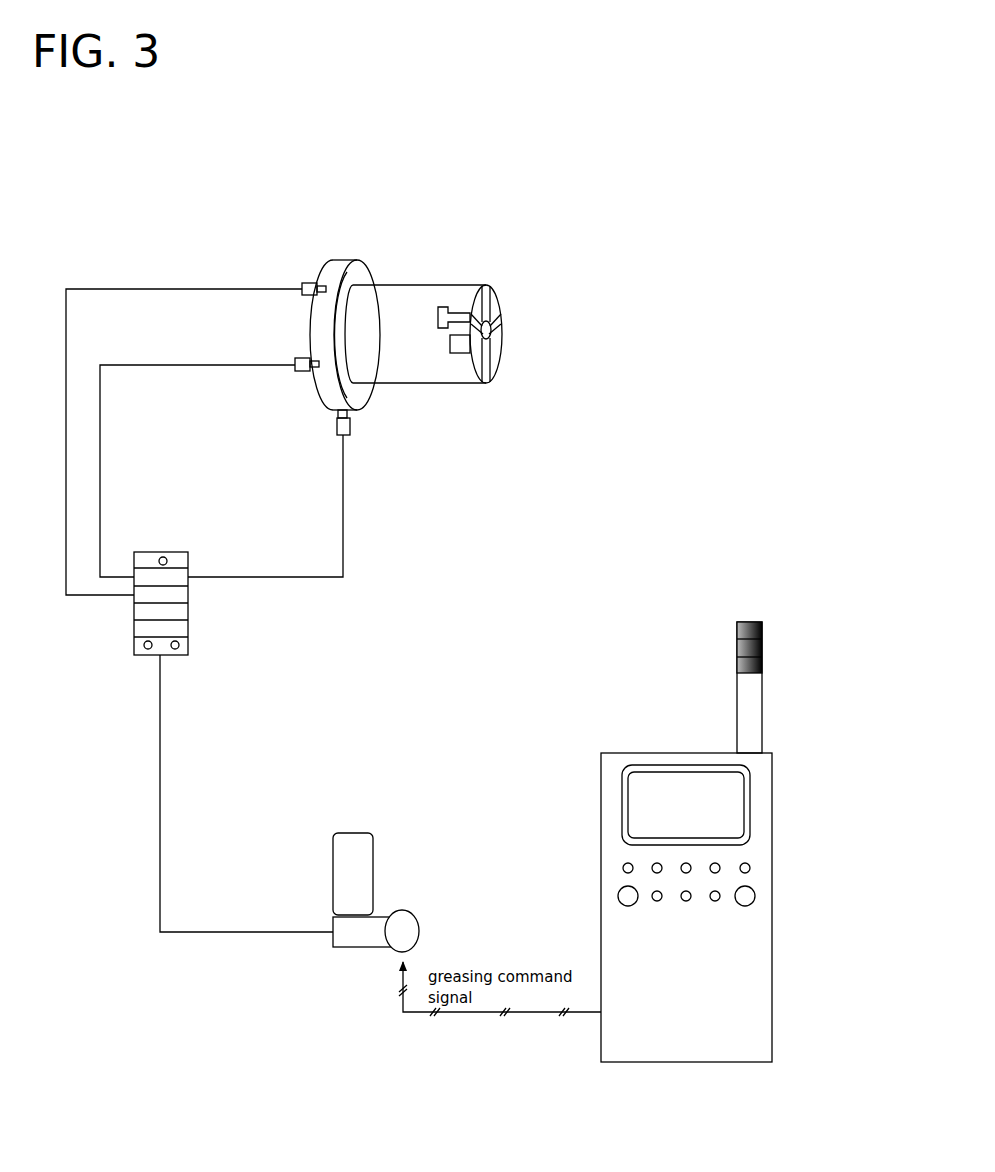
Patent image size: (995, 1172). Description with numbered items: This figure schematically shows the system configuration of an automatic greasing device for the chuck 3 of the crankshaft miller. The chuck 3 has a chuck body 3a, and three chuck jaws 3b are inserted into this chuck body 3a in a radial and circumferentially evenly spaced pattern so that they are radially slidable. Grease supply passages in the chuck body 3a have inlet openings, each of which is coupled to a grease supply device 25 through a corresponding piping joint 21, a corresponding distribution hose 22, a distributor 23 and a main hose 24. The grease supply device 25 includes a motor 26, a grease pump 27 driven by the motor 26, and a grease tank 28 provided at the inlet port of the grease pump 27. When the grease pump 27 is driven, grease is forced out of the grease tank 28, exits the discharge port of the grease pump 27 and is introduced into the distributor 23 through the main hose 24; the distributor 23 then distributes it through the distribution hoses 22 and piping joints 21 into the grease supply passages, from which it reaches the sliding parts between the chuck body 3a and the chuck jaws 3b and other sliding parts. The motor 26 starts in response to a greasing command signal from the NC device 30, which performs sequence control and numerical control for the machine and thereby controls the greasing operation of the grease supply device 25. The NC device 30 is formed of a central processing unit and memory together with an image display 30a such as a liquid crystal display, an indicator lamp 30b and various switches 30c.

The chuck 3 is at (453, 276).
The chuck body 3a is at (402, 285).
The chuck jaws 3b is at (438, 312).
The piping joint 21 is at (306, 282).
The distribution hose 22 is at (173, 288).
The distributor 23 is at (188, 610).
The main hose 24 is at (161, 800).
The grease supply device 25 is at (401, 885).
The motor 26 is at (418, 926).
The grease pump 27 is at (346, 948).
The grease tank 28 is at (333, 848).
The NC device 30 is at (594, 757).
The image display 30a is at (665, 790).
The indicator lamp 30b is at (737, 630).
The switches 30c is at (755, 913).